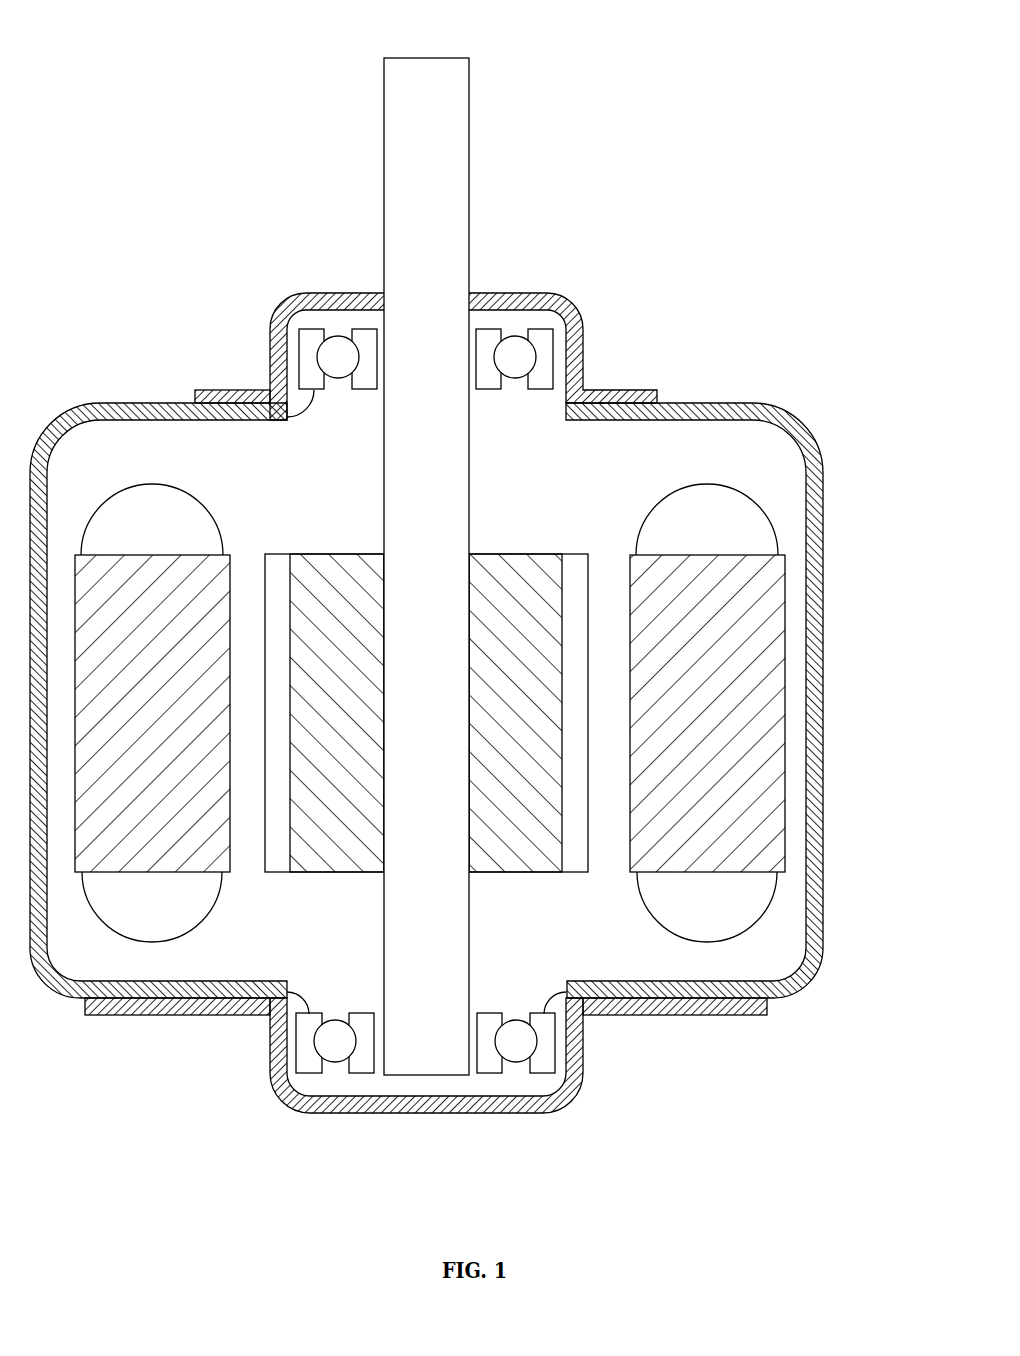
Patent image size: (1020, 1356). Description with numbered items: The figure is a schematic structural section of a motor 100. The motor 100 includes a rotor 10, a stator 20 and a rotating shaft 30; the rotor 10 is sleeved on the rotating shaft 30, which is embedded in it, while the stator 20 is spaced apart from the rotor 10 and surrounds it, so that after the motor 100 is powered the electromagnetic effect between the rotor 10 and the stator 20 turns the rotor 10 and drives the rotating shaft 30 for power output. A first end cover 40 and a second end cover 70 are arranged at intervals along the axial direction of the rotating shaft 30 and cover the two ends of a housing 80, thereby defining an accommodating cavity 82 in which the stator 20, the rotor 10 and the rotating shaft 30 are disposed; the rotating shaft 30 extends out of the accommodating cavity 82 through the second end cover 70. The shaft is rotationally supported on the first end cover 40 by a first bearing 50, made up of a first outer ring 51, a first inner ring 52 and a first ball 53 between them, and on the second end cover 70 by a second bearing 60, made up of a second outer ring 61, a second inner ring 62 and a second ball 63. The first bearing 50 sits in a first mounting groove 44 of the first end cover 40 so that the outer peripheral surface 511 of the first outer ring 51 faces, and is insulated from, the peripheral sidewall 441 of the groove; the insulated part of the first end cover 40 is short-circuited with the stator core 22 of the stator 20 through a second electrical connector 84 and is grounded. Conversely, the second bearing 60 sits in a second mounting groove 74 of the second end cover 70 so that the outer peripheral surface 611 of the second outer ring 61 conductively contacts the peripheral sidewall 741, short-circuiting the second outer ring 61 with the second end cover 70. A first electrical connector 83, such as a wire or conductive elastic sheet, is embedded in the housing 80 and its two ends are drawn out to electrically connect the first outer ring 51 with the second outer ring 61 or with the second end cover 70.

The motor 100 is at (450, 38).
The rotor 10 is at (513, 625).
The stator 20 is at (496, 713).
The stator core 22 is at (722, 748).
The rotating shaft 30 is at (430, 160).
The first end cover 40 is at (405, 1092).
The first mounting groove 44 is at (465, 1085).
The peripheral sidewall of the first mounting groove 441 is at (287, 1050).
The first bearing 50 is at (328, 1118).
The first outer ring 51 is at (212, 1093).
The first inner ring 52 is at (363, 1060).
The first ball 53 is at (337, 1052).
The outer peripheral surface of the first outer ring 511 is at (292, 1025).
The second bearing 60 is at (320, 307).
The second outer ring 61 is at (205, 342).
The second inner ring 62 is at (367, 337).
The second ball 63 is at (337, 347).
The outer peripheral surface of the second outer ring 611 is at (283, 343).
The second end cover 70 is at (372, 312).
The second mounting groove 74 is at (372, 312).
The peripheral sidewall of the second mounting groove 741 is at (280, 358).
The housing 80 is at (474, 702).
The accommodating cavity 82 is at (685, 470).
The first electrical connector 83 is at (272, 378).
The second electrical connector 84 is at (583, 1018).